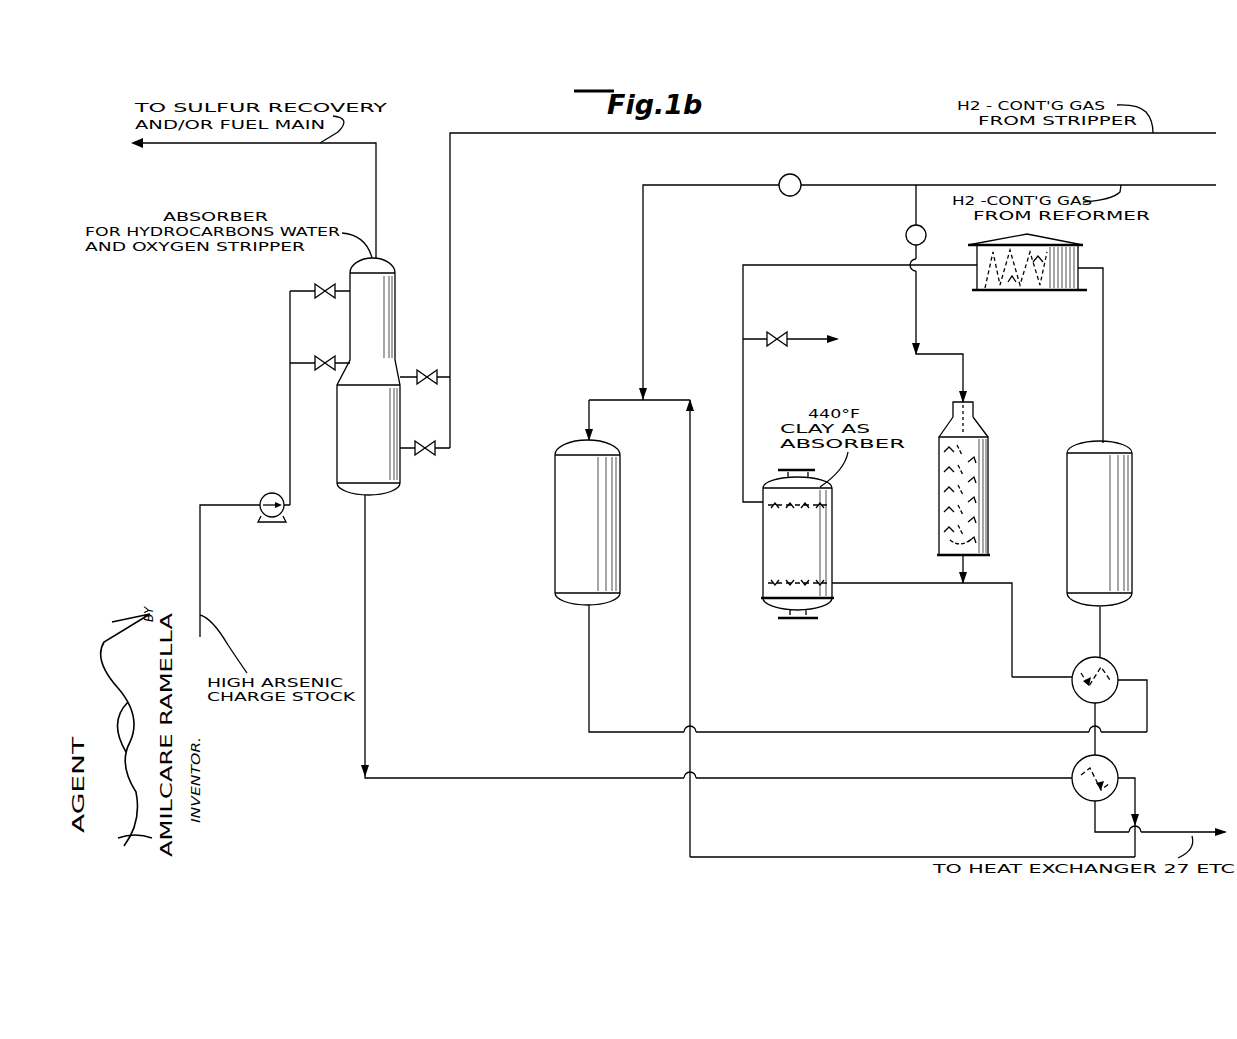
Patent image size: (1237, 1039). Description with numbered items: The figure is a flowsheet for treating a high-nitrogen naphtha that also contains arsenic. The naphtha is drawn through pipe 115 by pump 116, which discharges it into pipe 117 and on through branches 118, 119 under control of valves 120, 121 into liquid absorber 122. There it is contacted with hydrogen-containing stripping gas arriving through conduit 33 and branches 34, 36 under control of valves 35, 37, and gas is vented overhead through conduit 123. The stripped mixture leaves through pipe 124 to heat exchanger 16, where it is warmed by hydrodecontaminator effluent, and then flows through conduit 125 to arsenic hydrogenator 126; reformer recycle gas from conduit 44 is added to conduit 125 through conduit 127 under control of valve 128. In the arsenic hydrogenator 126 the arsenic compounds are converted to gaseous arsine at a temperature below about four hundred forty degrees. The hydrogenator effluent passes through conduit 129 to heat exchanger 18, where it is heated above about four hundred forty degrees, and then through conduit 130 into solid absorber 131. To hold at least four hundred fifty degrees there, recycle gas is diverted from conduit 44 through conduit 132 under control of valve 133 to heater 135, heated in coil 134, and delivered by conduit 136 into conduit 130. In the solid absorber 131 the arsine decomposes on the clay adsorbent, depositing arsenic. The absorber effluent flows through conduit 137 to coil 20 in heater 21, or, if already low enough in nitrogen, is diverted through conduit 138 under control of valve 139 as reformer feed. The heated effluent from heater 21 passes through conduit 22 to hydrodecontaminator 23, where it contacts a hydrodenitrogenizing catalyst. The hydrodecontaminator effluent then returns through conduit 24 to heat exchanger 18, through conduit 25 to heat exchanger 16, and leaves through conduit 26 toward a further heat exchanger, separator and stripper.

The heat exchanger 16 is at (1084, 762).
The heat exchanger 18 is at (1075, 690).
The coil 20 is at (985, 296).
The heater 21 is at (1070, 241).
The conduit 22 is at (1103, 320).
The hydrodecontaminator 23 is at (1120, 505).
The conduit 24 is at (1100, 629).
The conduit 25 is at (1096, 745).
The conduit 26 is at (1180, 814).
The conduit 33 is at (916, 131).
The branch 34 is at (415, 372).
The valve 35 is at (425, 391).
The branch 36 is at (418, 446).
The valve 37 is at (425, 456).
The conduit 44 is at (1092, 185).
The pipe 115 is at (200, 577).
The pump 116 is at (268, 521).
The pipe 117 is at (290, 418).
The branch 118 is at (290, 291).
The branch 119 is at (300, 363).
The valve 120 is at (324, 284).
The valve 121 is at (326, 370).
The liquid absorber 122 is at (402, 272).
The conduit 123 is at (376, 190).
The pipe 124 is at (365, 600).
The conduit 125 is at (690, 596).
The arsenic hydrogenator 126 is at (554, 525).
The conduit 127 is at (643, 272).
The valve 128 is at (797, 176).
The conduit 129 is at (826, 732).
The conduit 130 is at (1012, 655).
The solid absorber 131 is at (763, 542).
The conduit 132 is at (916, 303).
The valve 133 is at (908, 228).
The coil 134 is at (993, 442).
The heater 135 is at (988, 503).
The conduit 136 is at (965, 572).
The conduit 137 is at (743, 396).
The conduit 138 is at (808, 339).
The valve 139 is at (778, 346).